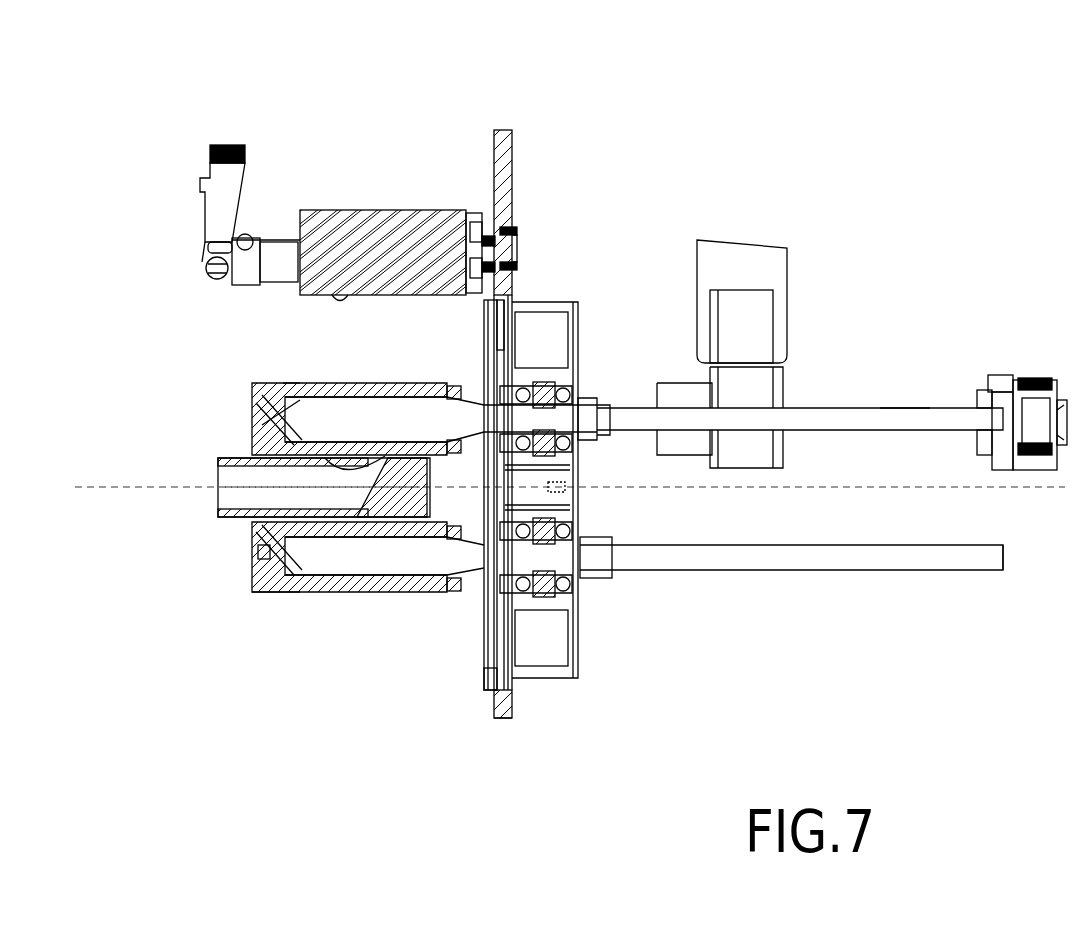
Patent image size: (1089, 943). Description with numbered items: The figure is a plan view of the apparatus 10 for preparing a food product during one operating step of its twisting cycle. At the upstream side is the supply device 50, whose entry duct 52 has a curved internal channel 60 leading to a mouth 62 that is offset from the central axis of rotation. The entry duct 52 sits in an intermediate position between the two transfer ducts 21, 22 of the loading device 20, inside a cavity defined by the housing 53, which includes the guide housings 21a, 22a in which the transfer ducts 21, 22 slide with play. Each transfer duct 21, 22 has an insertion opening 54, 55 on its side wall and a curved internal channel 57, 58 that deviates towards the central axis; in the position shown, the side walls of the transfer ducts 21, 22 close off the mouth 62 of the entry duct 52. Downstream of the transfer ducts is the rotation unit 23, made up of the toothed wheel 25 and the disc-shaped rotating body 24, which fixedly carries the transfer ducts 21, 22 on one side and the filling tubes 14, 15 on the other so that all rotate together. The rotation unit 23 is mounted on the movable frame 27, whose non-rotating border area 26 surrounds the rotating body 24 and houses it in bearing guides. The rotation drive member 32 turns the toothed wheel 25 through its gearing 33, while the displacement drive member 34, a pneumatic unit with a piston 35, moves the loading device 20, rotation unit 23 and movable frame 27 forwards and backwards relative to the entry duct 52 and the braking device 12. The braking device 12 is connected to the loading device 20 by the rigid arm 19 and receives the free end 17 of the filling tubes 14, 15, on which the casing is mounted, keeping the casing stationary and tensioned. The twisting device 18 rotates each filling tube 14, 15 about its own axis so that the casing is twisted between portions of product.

The apparatus 10 is at (90, 92).
The braking device 12 is at (1031, 376).
The filling tube 14 is at (830, 572).
The filling tube 15 is at (845, 405).
The free end 17 is at (985, 410).
The twisting device 18 is at (786, 313).
The rigid arm 19 is at (905, 406).
The loading device 20 is at (477, 588).
The transfer duct 21 is at (339, 623).
The guide housing 21a is at (278, 594).
The transfer duct 22 is at (346, 380).
The guide housing 22a is at (292, 383).
The rotation unit 23 is at (513, 182).
The rotating body 24 is at (560, 303).
The toothed wheel 25 is at (497, 333).
The border area 26 is at (486, 680).
The movable frame 27 is at (512, 715).
The rotation drive member 32 is at (390, 230).
The gearing 33 is at (488, 225).
The displacement drive member 34 is at (268, 240).
The piston 35 is at (288, 247).
The supply device 50 is at (287, 470).
The entry duct 52 is at (308, 470).
The housing 53 is at (256, 594).
The insertion opening 54 is at (290, 528).
The insertion opening 55 is at (290, 442).
The internal channel 57 is at (366, 419).
The internal channel 58 is at (366, 556).
The internal channel 60 is at (322, 497).
The mouth 62 is at (355, 450).